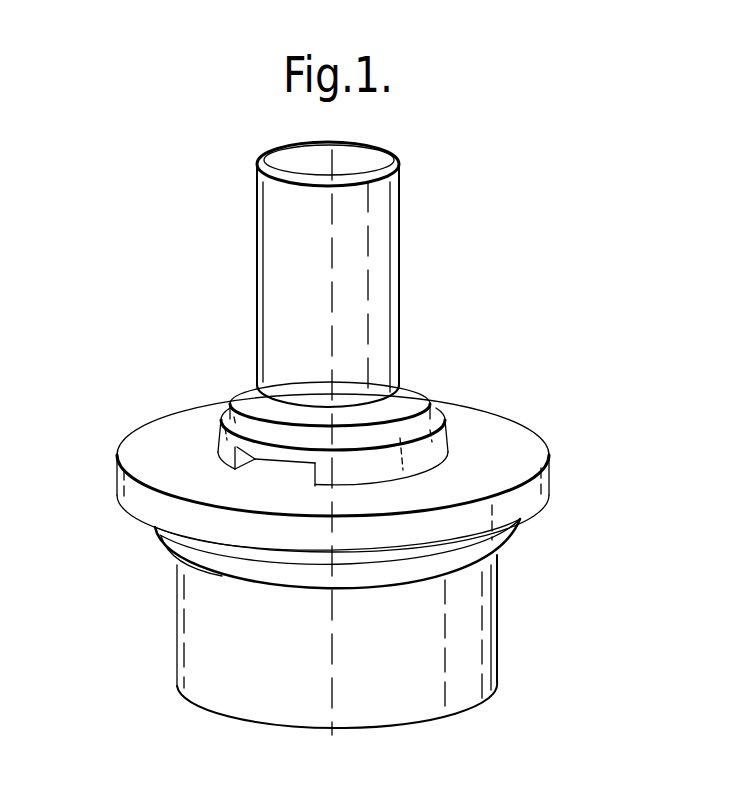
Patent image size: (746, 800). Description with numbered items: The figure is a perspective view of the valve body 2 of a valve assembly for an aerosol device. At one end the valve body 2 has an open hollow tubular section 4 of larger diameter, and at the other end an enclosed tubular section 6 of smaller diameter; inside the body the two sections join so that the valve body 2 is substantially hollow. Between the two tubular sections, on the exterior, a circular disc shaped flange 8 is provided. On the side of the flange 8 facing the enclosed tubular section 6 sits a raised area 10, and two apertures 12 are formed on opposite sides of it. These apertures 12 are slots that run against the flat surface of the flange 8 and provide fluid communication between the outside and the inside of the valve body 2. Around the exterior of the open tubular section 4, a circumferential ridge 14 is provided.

The valve body 2 is at (476, 248).
The open hollow tubular section 4 is at (487, 647).
The enclosed tubular section 6 is at (313, 203).
The flange 8 is at (526, 456).
The raised area 10 is at (226, 404).
The aperture 12 is at (266, 469).
The circumferential ridge 14 is at (460, 553).